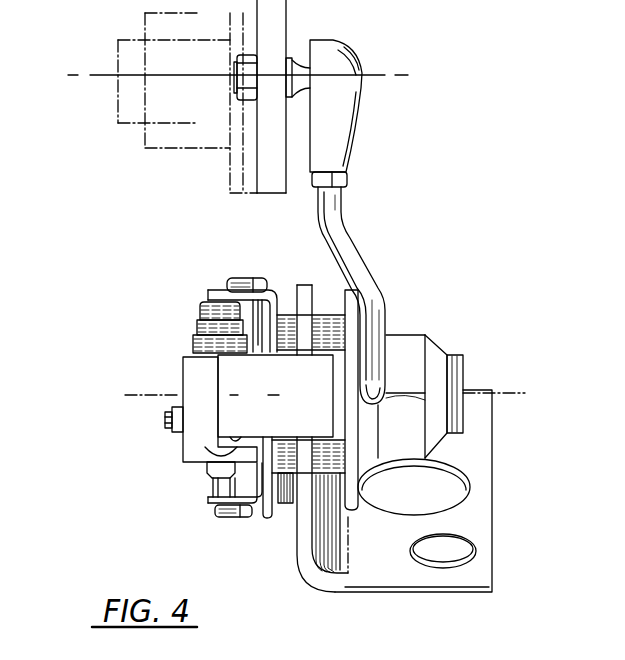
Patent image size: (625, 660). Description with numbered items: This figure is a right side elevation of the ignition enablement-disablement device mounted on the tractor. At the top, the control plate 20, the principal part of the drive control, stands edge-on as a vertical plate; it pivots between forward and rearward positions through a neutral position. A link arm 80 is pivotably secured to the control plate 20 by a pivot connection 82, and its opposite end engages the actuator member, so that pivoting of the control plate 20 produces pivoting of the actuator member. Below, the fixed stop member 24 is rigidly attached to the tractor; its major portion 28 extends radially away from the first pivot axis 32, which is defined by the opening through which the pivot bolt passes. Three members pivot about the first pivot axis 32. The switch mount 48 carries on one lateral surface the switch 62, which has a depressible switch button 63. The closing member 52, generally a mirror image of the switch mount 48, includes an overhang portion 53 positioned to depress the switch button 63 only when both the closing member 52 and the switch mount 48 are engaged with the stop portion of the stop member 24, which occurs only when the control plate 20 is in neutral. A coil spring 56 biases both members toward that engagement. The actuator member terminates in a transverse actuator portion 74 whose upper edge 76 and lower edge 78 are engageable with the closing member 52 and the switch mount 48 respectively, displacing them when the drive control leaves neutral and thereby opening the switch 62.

The control plate 20 is at (270, 186).
The stop member 24 is at (365, 556).
The major portion 28 is at (303, 538).
The first pivot axis 32 is at (153, 395).
The switch mount 48 is at (207, 500).
The closing member 52 is at (208, 300).
The overhang portion 53 is at (217, 290).
The coil spring 56 is at (250, 279).
The switch 62 is at (180, 375).
The switch button 63 is at (207, 302).
The actuator portion 74 is at (275, 396).
The upper edge 76 is at (329, 349).
The lower edge 78 is at (238, 440).
The link arm 80 is at (355, 250).
The pivot connection 82 is at (289, 60).